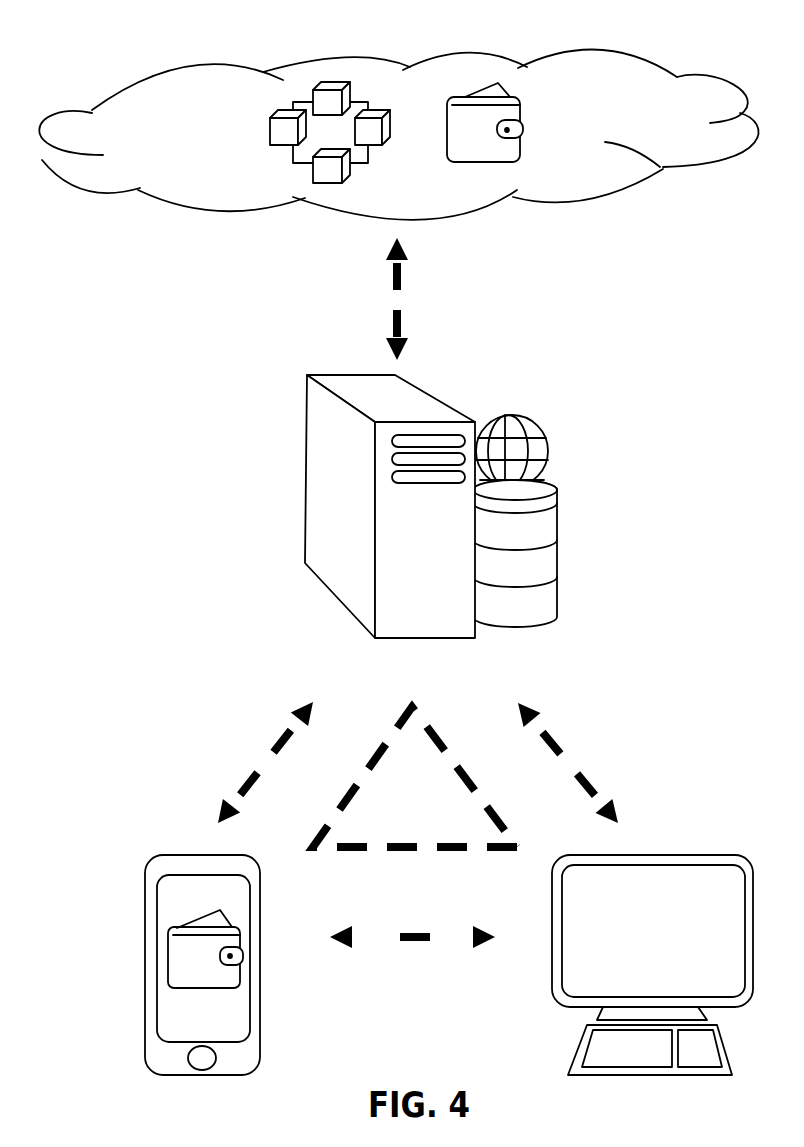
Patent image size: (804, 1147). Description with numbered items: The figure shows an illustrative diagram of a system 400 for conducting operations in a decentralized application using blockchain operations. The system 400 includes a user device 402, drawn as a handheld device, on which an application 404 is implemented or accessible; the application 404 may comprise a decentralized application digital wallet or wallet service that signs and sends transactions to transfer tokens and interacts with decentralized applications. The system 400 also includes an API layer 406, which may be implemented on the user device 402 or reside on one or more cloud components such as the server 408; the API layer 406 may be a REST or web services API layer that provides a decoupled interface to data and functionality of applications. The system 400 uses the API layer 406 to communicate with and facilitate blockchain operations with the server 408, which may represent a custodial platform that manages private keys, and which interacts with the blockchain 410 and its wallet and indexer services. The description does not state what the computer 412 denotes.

The system 400 is at (410, 32).
The user device 402 is at (162, 841).
The application 404 is at (176, 955).
The API layer 406 is at (437, 813).
The server 408 is at (287, 448).
The blockchain 410 is at (457, 222).
The computer 412 is at (597, 758).